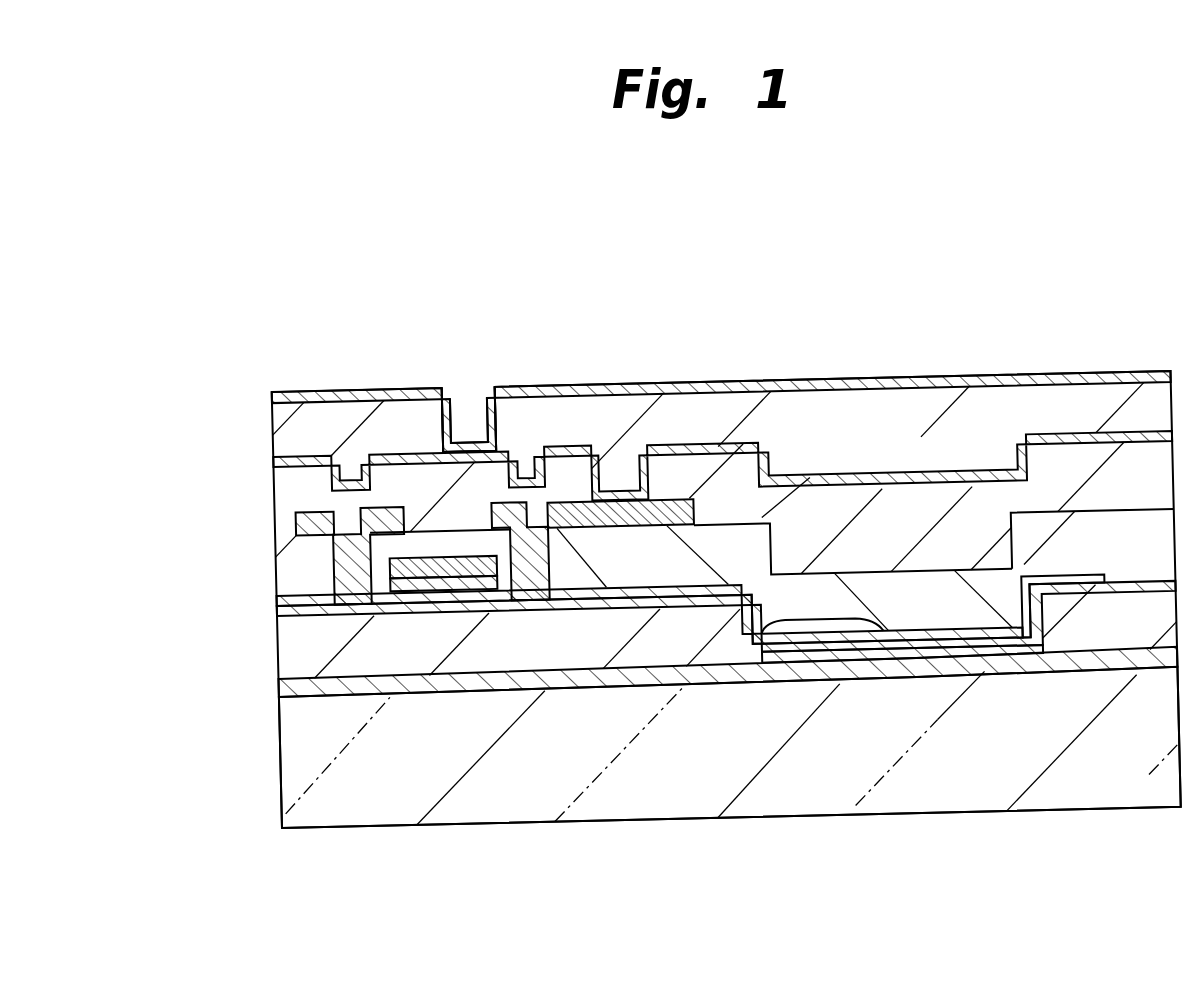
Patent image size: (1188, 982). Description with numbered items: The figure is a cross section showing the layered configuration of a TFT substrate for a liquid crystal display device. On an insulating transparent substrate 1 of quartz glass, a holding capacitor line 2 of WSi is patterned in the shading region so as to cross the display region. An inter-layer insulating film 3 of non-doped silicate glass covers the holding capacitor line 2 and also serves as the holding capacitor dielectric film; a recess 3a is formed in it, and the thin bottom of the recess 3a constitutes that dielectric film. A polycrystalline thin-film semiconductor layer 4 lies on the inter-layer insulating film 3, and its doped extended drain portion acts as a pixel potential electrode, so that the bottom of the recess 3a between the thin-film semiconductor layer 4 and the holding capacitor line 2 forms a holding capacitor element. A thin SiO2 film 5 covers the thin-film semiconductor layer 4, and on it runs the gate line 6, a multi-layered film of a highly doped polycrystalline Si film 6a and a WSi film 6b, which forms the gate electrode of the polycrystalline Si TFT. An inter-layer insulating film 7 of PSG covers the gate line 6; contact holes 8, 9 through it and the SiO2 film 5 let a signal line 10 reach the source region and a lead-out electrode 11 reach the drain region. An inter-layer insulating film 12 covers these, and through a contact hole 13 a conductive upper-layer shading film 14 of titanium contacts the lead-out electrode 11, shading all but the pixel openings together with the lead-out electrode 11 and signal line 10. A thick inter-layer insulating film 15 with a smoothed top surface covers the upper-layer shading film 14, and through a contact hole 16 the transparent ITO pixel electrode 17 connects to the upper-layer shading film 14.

The insulating transparent substrate 1 is at (720, 790).
The holding capacitor line 2 is at (962, 668).
The inter-layer insulating film 3 is at (577, 656).
The recess 3a is at (878, 633).
The thin-film semiconductor layer 4 is at (301, 609).
The SiO2 film 5 is at (488, 612).
The gate line 6 is at (477, 445).
The polycrystalline Si film 6a is at (505, 558).
The WSi film 6b is at (470, 560).
The inter-layer insulating film 7 is at (1090, 538).
The contact hole 8 is at (337, 556).
The contact hole 9 is at (548, 503).
The signal line 10 is at (298, 518).
The lead-out electrode 11 is at (683, 500).
The inter-layer insulating film 12 is at (1003, 497).
The contact hole 13 is at (636, 460).
The upper-layer shading film 14 is at (868, 474).
The inter-layer insulating film 15 is at (930, 410).
The contact hole 16 is at (480, 412).
The pixel electrode 17 is at (1138, 370).